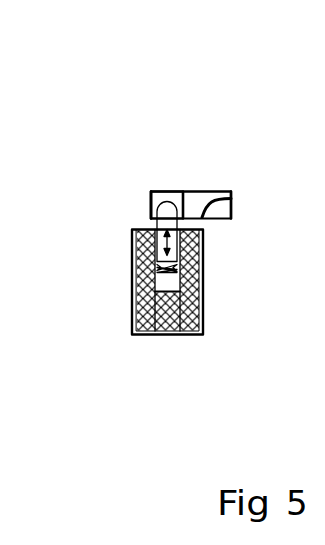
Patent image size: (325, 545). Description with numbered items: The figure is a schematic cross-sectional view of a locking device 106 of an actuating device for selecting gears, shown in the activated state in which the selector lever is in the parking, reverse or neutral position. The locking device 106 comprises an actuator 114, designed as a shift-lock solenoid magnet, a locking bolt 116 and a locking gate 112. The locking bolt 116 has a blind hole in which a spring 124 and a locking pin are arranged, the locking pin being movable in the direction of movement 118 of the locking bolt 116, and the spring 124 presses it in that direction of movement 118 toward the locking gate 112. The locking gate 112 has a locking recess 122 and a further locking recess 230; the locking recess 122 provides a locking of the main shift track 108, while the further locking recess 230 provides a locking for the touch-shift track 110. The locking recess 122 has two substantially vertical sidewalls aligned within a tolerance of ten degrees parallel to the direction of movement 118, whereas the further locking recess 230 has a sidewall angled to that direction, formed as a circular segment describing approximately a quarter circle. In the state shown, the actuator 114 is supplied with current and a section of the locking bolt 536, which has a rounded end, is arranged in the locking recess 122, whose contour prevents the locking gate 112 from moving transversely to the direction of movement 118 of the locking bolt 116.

The locking device 106 is at (127, 145).
The main shift track 108 is at (188, 147).
The touch-shift track 110 is at (235, 147).
The locking gate 112 is at (225, 190).
The locking recess 122 is at (150, 193).
The section of the locking bolt 536 is at (167, 221).
The direction of movement 118 is at (156, 270).
The locking bolt 116 is at (137, 280).
The actuator 114 is at (177, 334).
The spring 124 is at (204, 268).
The further locking recess 230 is at (222, 206).